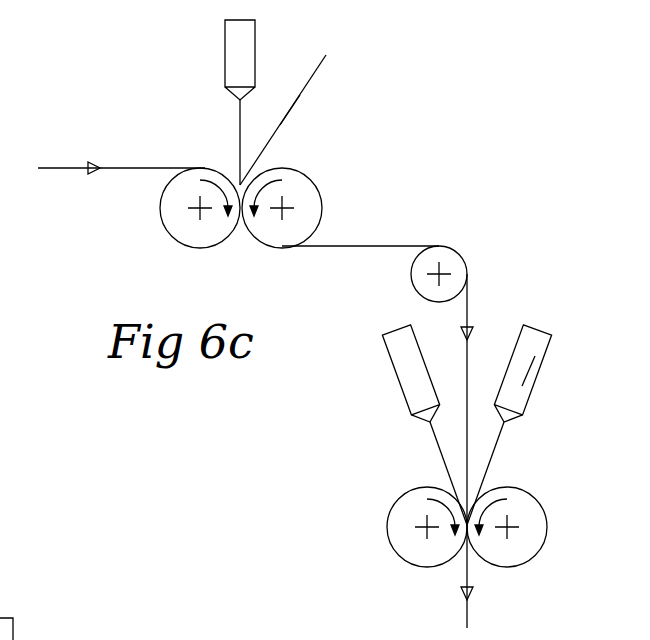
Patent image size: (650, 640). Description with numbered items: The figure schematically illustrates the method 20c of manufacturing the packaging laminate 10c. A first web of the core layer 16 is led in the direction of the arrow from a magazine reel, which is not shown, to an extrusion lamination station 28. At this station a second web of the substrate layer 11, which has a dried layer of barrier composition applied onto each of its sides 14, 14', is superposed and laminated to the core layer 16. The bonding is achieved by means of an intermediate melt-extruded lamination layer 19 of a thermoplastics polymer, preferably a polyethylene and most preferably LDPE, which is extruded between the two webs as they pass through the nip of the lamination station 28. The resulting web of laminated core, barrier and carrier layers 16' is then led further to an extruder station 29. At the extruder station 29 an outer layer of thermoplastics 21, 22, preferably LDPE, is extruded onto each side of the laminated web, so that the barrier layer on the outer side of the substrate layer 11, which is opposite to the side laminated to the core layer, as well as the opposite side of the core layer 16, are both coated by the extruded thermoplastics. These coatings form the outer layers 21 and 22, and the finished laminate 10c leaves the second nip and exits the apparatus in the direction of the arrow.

The packaging laminate 10c is at (467, 561).
The substrate layer 11 is at (298, 108).
The barrier composition layer 14 is at (41, 615).
The barrier composition layer 14' is at (318, 96).
The core layer 16 is at (121, 137).
The web of laminated core, barrier and carrier layers 16' is at (377, 352).
The lamination layer 19 is at (240, 142).
The method 20c is at (549, 219).
The outer layer of thermoplastics 21 is at (440, 452).
The outer layer of thermoplastics 22 is at (494, 460).
The extrusion lamination station 28 is at (226, 52).
The extruder station 29 is at (530, 368).